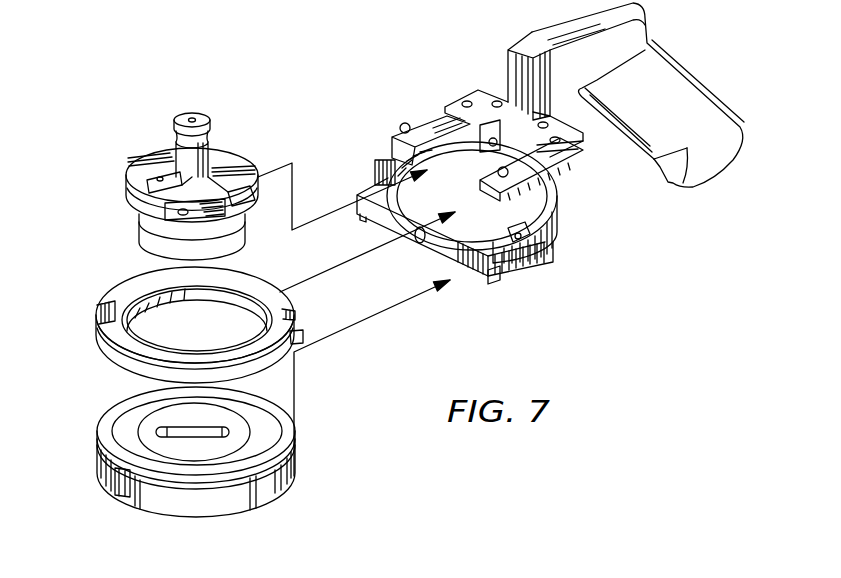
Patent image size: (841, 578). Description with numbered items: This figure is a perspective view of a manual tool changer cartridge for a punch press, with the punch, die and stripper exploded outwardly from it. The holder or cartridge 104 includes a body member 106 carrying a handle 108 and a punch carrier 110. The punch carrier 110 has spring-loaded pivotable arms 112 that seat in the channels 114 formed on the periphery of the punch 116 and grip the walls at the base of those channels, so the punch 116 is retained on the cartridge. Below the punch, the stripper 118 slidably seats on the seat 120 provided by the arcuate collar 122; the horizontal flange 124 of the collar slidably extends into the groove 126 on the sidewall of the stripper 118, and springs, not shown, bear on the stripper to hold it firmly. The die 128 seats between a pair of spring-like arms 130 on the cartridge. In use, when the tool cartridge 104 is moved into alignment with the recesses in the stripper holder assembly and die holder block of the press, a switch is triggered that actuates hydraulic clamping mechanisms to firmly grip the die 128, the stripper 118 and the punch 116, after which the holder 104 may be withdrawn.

The holder or cartridge 104 is at (762, 95).
The body member 106 is at (562, 34).
The handle 108 is at (657, 90).
The punch carrier 110 is at (583, 157).
The spring-loaded pivotable arms 112 is at (558, 200).
The channels 114 is at (247, 216).
The punch 116 is at (232, 140).
The stripper 118 is at (92, 360).
The seat 120 is at (390, 162).
The arcuate collar 122 is at (453, 157).
The horizontal flange 124 is at (513, 250).
The groove 126 is at (301, 335).
The die 128 is at (343, 460).
The spring-like arms 130 is at (493, 280).